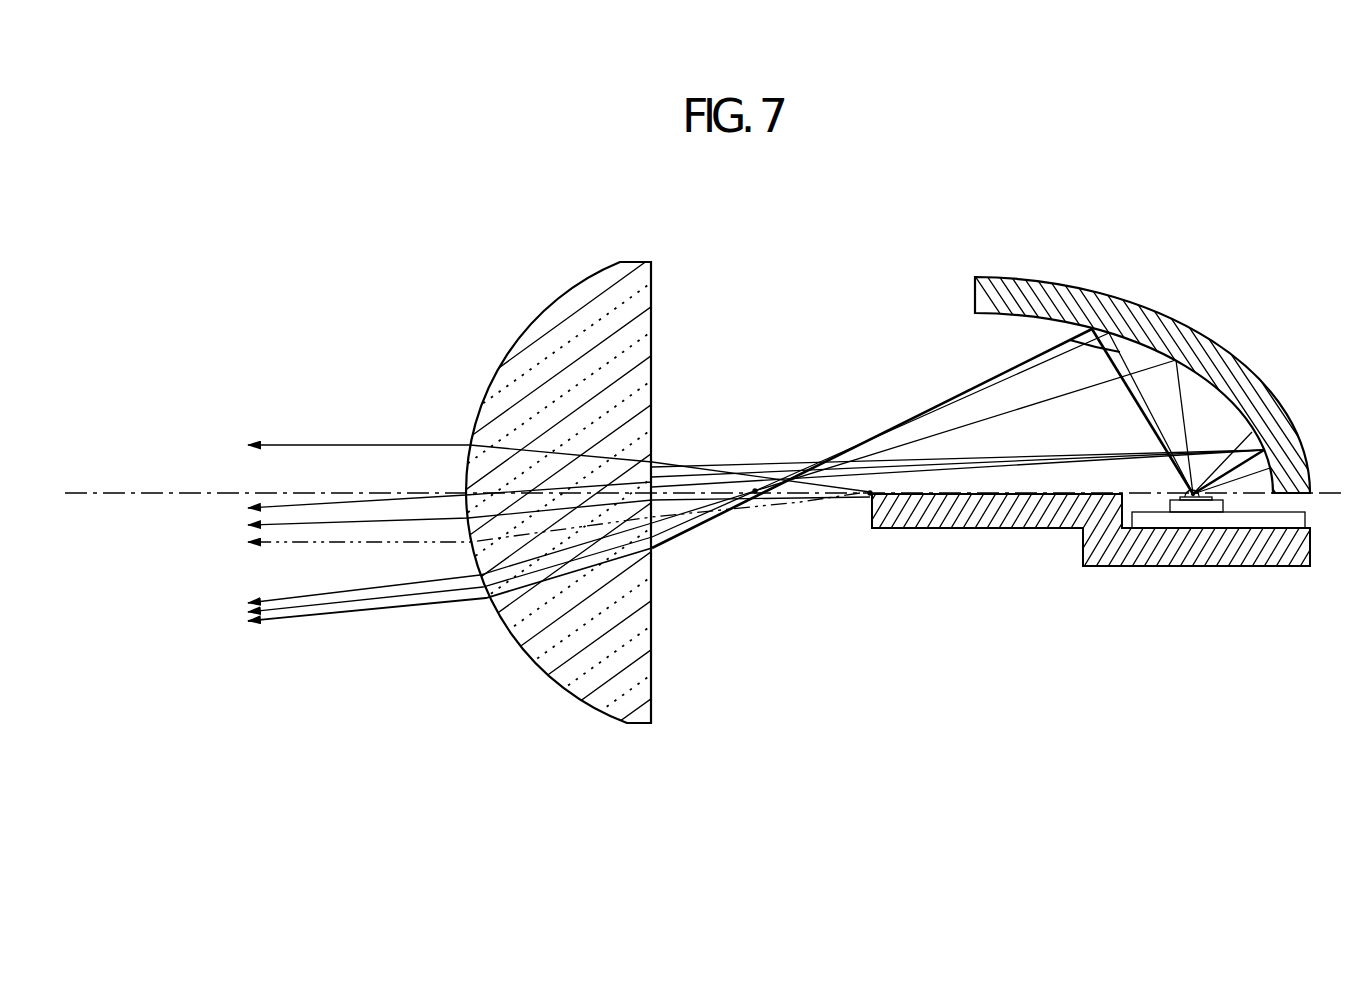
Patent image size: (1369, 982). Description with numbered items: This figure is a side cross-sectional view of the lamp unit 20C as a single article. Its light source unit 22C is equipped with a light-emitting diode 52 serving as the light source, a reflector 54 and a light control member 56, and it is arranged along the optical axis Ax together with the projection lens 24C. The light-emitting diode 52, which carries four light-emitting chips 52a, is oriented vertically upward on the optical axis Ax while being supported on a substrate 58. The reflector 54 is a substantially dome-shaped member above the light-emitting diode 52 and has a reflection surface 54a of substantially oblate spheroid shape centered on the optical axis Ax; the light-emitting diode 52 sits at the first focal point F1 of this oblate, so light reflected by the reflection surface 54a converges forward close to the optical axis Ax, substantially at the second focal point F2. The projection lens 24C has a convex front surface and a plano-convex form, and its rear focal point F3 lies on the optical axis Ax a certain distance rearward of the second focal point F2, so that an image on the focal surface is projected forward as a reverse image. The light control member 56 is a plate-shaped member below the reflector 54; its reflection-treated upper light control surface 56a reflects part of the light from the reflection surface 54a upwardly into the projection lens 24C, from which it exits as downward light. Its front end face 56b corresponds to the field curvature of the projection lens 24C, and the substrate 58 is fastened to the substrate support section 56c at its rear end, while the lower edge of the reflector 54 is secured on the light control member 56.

The lamp unit 20C is at (1092, 192).
The light source unit 22C is at (867, 316).
The projection lens 24C is at (567, 290).
The light-emitting diode 52 is at (1172, 491).
The light-emitting chips 52a is at (1205, 494).
The reflector 54 is at (1141, 302).
The reflection surface 54a is at (1158, 356).
The light control member 56 is at (997, 532).
The light control surface 56a is at (915, 492).
The front end face 56b is at (870, 513).
The substrate support section 56c is at (1178, 568).
The substrate 58 is at (1240, 532).
The first focal point F1 is at (1194, 490).
The second focal point F2 is at (755, 489).
The rear focal point F3 is at (870, 490).
The optical axis Ax is at (178, 492).